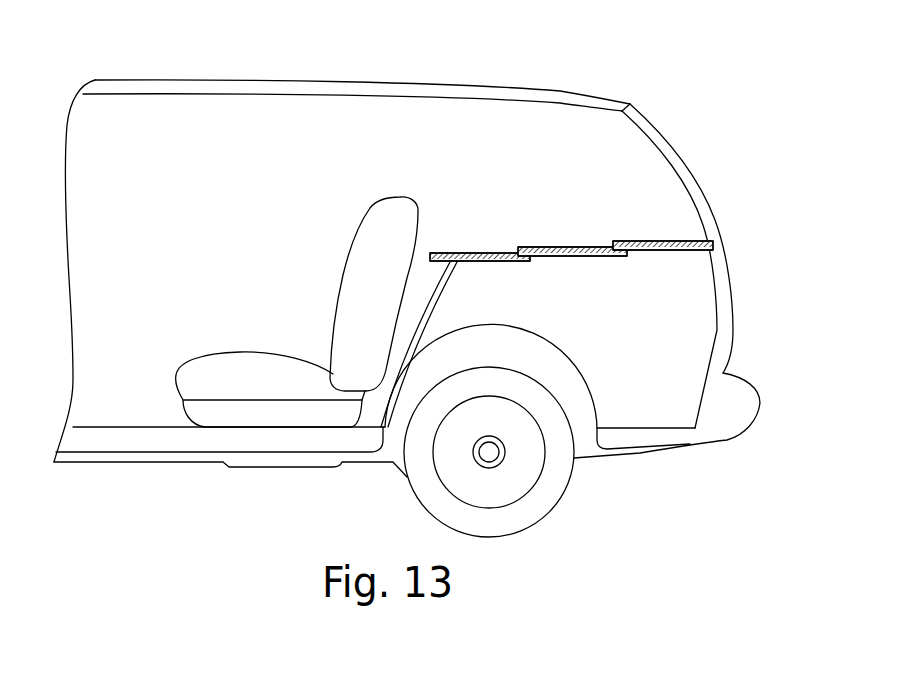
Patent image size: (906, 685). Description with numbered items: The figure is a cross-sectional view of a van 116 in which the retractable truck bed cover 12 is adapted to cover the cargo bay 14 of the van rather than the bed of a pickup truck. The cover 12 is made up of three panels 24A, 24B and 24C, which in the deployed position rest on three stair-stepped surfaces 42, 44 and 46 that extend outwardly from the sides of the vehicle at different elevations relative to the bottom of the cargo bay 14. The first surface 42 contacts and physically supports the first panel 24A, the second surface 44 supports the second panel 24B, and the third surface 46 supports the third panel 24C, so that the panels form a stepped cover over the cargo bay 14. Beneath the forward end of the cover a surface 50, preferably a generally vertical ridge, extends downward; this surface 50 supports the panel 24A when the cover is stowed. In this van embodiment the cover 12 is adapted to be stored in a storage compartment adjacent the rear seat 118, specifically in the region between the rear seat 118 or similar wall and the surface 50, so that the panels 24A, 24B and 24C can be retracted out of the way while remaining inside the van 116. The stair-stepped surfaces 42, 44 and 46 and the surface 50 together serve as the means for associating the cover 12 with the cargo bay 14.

The van 116 is at (540, 62).
The retractable truck bed cover 12 is at (500, 170).
The cargo bay 14 is at (660, 347).
The rear seat 118 is at (399, 195).
The panel 24A is at (477, 252).
The panel 24B is at (570, 247).
The panel 24C is at (630, 241).
The stair-stepped surface 42 is at (490, 263).
The stair-stepped surface 44 is at (586, 258).
The stair-stepped surface 46 is at (703, 251).
The surface 50 is at (422, 325).